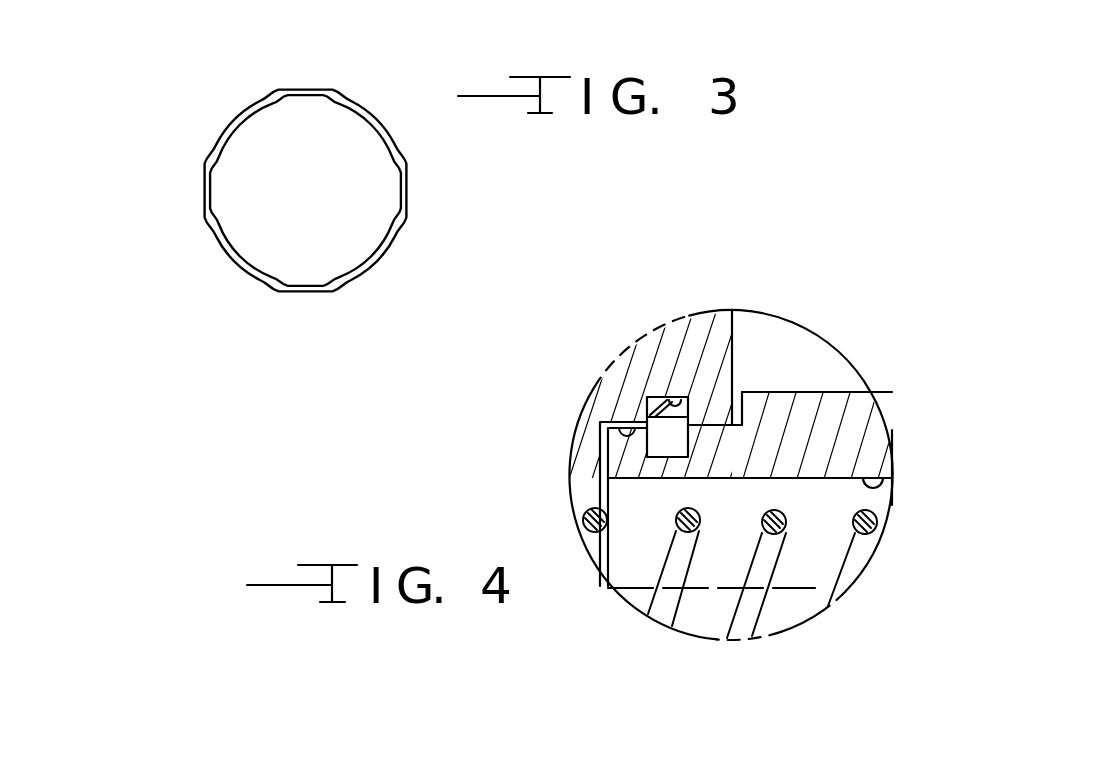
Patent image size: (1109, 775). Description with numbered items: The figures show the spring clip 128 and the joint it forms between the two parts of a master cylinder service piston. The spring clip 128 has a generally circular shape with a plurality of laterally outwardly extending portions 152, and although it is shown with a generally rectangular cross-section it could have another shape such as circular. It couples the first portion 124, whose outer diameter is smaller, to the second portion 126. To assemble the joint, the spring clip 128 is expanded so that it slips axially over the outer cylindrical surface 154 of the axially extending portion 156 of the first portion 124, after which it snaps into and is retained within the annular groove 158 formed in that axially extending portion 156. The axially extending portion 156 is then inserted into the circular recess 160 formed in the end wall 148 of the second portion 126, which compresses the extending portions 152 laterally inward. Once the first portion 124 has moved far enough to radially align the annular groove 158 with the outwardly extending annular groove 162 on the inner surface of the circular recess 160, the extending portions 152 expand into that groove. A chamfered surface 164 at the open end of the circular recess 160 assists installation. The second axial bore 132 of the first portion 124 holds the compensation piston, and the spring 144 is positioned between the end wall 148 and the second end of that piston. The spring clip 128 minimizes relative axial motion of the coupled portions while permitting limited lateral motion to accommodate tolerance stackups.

In FIG. 4, the first portion 124 is at (858, 410).
In FIG. 4, the second portion 126 is at (666, 336).
In FIG. 3, the spring clip 128 is at (392, 120).
In FIG. 4, the spring clip 128 is at (634, 447).
In FIG. 4, the second axial bore 132 is at (880, 484).
In FIG. 4, the spring 144 is at (862, 533).
In FIG. 4, the end wall 148 is at (603, 532).
In FIG. 3, the laterally outwardly extending portions 152 is at (304, 88).
In FIG. 4, the laterally outwardly extending portions 152 is at (672, 404).
In FIG. 4, the outer cylindrical surface 154 is at (689, 426).
In FIG. 4, the axially extending portion 156 is at (628, 463).
In FIG. 4, the annular groove 158 is at (690, 446).
In FIG. 4, the circular recess 160 is at (612, 450).
In FIG. 4, the annular groove 162 is at (648, 400).
In FIG. 4, the chamfered surface 164 is at (743, 417).